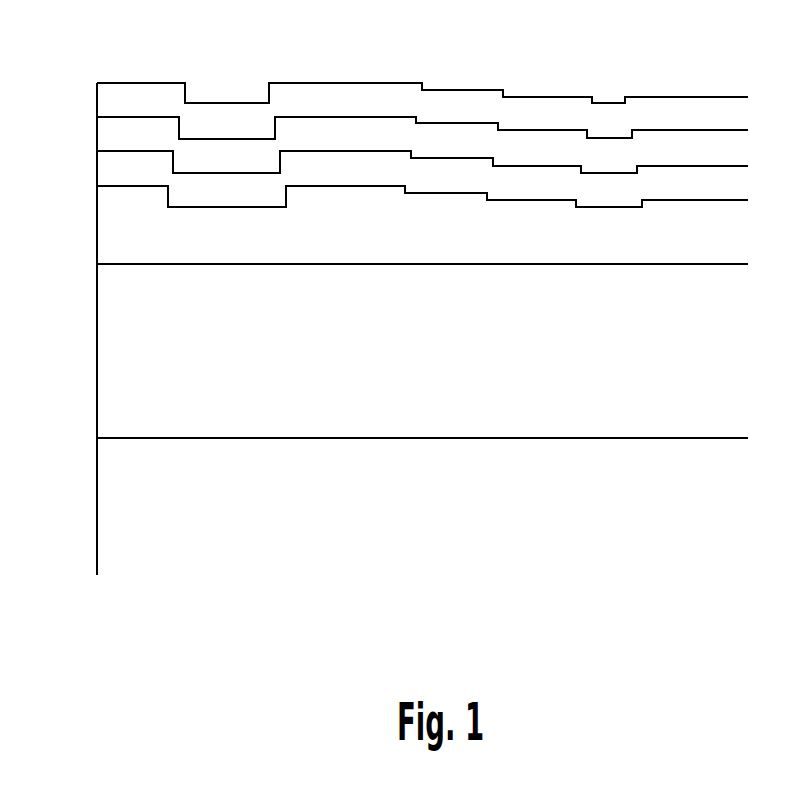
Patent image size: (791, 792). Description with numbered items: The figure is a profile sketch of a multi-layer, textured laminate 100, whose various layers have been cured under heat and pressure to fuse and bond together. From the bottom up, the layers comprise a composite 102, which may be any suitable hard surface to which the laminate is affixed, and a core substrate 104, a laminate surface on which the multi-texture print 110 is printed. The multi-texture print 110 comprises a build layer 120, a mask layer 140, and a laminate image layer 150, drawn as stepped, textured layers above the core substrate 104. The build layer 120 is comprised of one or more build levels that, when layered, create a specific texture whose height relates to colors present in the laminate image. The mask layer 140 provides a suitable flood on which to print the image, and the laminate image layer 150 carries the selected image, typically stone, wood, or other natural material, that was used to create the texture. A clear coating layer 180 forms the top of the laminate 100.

The laminate 100 is at (82, 652).
The composite 102 is at (453, 491).
The core substrate 104 is at (453, 365).
The multi-texture print 110 is at (405, 137).
The build layer 120 is at (453, 252).
The mask layer 140 is at (703, 185).
The laminate image layer 150 is at (663, 152).
The clear coating layer 180 is at (555, 118).